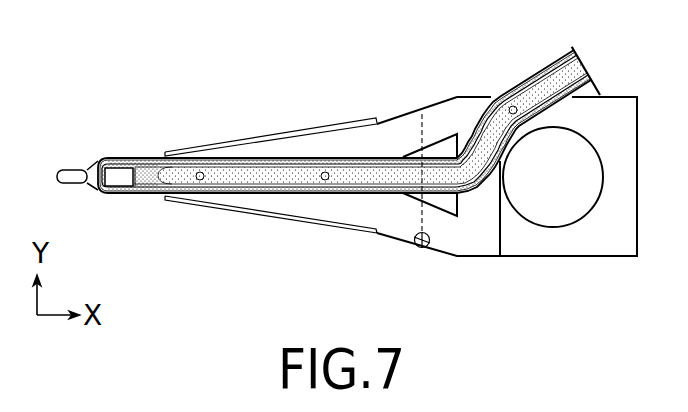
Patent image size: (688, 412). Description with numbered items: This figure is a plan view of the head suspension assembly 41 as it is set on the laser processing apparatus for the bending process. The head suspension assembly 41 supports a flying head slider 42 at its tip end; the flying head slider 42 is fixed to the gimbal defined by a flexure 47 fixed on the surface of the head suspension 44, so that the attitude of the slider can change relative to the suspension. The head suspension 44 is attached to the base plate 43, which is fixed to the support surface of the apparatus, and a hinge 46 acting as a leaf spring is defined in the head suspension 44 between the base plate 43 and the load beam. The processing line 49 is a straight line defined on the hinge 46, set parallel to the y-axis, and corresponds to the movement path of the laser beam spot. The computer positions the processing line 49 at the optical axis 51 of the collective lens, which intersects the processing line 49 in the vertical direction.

The head suspension assembly 41 is at (180, 105).
The flying head slider 42 is at (120, 182).
The base plate 43 is at (618, 96).
The head suspension 44 is at (310, 127).
The hinge 46 is at (441, 252).
The flexure 47 is at (97, 160).
The processing line 49 is at (421, 114).
The optical axis 51 is at (416, 245).